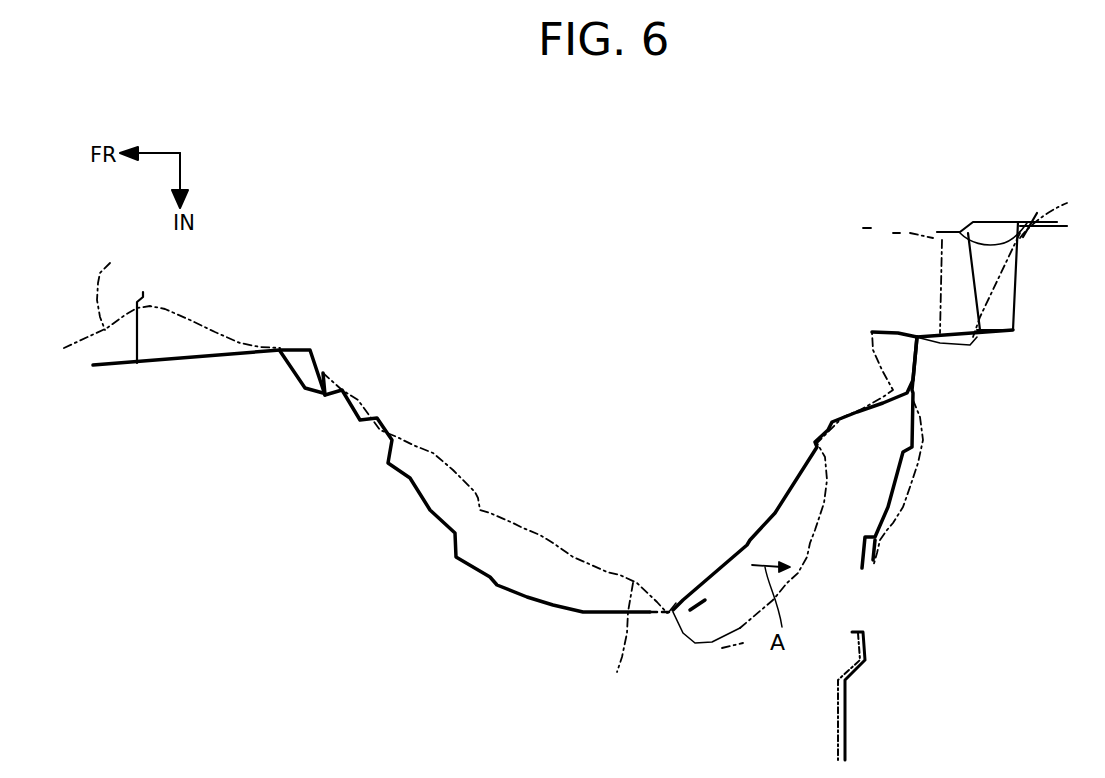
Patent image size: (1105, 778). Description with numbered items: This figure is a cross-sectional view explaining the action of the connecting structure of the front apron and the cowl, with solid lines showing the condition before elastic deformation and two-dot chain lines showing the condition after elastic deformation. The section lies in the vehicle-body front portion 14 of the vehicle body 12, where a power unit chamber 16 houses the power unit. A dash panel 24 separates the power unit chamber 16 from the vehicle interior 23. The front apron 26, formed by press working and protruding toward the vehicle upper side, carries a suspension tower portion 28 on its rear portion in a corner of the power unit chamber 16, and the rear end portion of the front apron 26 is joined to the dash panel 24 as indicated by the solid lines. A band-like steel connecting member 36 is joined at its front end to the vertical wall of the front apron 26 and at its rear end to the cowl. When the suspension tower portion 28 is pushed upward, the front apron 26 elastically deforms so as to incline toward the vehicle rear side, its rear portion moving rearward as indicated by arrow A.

The vehicle body 12 is at (172, 428).
The vehicle-body front portion 14 is at (246, 583).
The power unit chamber 16 is at (542, 681).
The vehicle interior 23 is at (1087, 511).
The dash panel 24 is at (890, 503).
The front apron 26 is at (687, 667).
The suspension tower portion 28 is at (616, 644).
The connecting member 36 is at (719, 665).